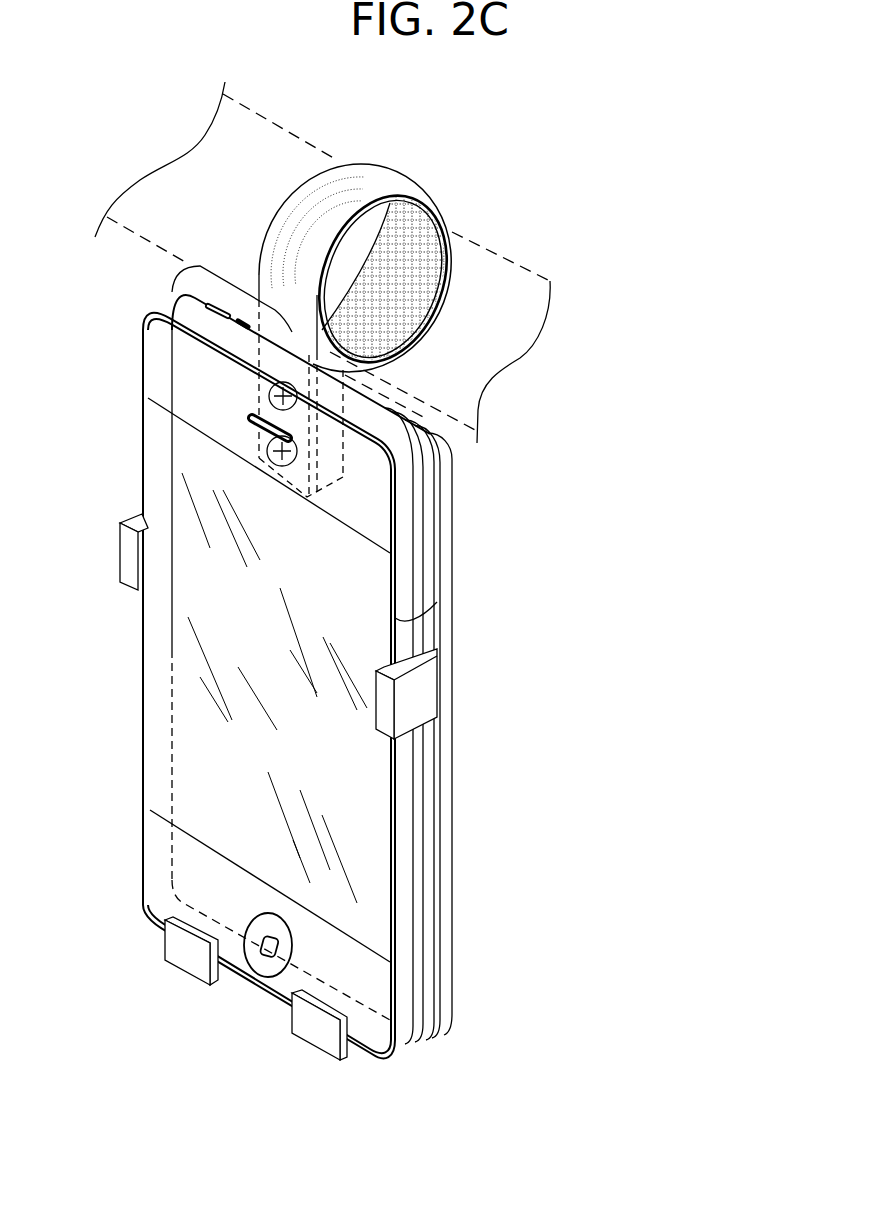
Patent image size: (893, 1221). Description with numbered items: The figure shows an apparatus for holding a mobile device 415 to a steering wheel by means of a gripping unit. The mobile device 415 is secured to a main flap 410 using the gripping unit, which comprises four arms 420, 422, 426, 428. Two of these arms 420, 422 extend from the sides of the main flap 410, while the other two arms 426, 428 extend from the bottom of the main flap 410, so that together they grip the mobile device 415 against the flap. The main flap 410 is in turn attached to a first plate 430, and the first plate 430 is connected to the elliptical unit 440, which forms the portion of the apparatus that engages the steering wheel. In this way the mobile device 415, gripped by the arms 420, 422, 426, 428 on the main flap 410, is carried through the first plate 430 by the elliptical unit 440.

The main flap 410 is at (446, 756).
The mobile device 415 is at (423, 813).
The arm 420 is at (415, 690).
The arm 422 is at (127, 556).
The arm 426 is at (313, 1033).
The arm 428 is at (198, 964).
The first plate 430 is at (180, 268).
The elliptical unit 440 is at (425, 203).